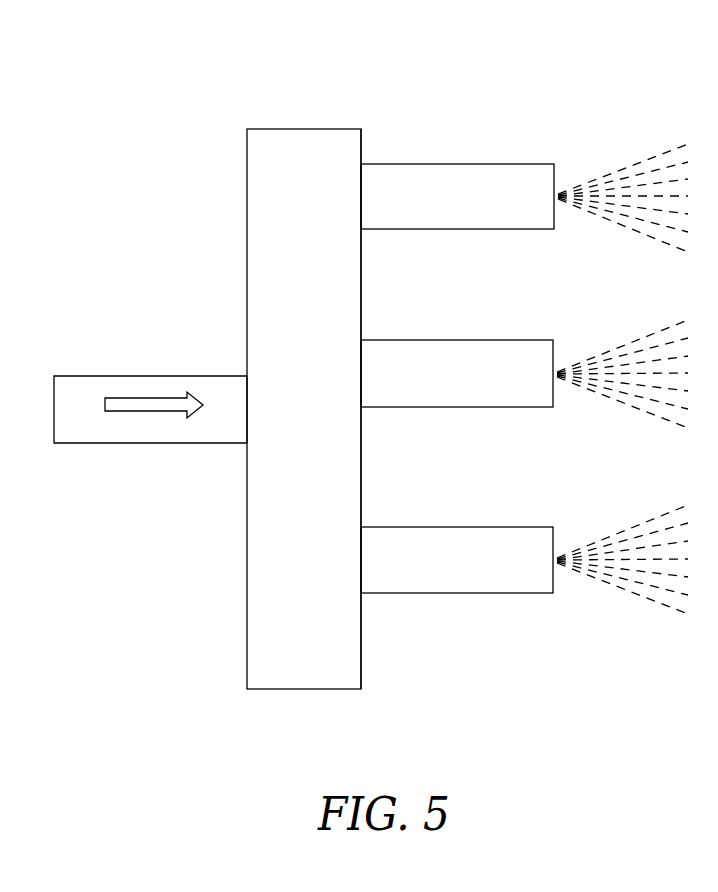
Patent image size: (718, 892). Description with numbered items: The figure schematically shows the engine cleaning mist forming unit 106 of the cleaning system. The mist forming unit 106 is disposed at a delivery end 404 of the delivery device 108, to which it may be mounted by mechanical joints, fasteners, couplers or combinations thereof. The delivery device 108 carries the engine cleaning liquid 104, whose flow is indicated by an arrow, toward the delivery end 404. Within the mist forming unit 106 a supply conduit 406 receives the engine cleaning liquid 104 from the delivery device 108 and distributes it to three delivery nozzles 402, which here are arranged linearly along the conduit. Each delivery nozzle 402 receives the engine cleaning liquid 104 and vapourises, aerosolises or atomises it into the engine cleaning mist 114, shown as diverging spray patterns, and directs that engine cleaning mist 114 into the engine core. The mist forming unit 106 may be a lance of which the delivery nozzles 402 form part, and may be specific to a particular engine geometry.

The mist forming unit 106 is at (228, 122).
The supply conduit 406 is at (362, 147).
The delivery nozzle 402 is at (517, 164).
The engine cleaning mist 114 is at (614, 162).
The delivery device 108 is at (98, 443).
The engine cleaning liquid 104 is at (147, 398).
The delivery end 404 is at (234, 368).